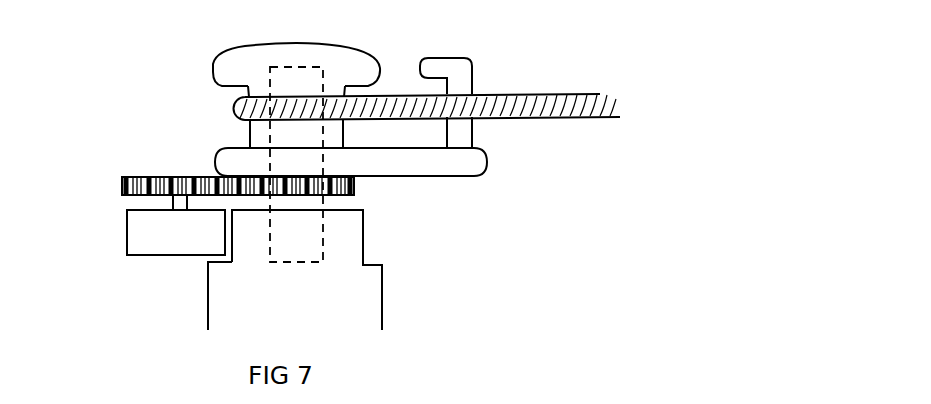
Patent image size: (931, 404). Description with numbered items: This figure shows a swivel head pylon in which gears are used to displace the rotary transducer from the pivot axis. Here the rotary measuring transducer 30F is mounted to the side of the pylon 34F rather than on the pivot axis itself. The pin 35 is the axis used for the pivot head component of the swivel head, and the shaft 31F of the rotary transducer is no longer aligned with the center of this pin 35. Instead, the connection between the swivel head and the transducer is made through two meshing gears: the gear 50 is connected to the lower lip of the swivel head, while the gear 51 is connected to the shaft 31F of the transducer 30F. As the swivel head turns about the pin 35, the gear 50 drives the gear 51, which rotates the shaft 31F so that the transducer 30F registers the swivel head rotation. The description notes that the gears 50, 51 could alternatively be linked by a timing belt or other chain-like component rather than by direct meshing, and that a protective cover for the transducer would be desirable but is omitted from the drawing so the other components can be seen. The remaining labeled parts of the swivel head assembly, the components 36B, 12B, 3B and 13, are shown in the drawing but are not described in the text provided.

The knob 36B is at (236, 52).
The post 12B is at (248, 128).
The bracket 3B is at (216, 164).
The rope 13 is at (523, 123).
The gear 51 is at (122, 185).
The gear 50 is at (355, 183).
The shaft 31F is at (173, 200).
The rotary measuring transducer 30F is at (127, 238).
The pin 35 is at (323, 199).
The pylon 34F is at (208, 282).